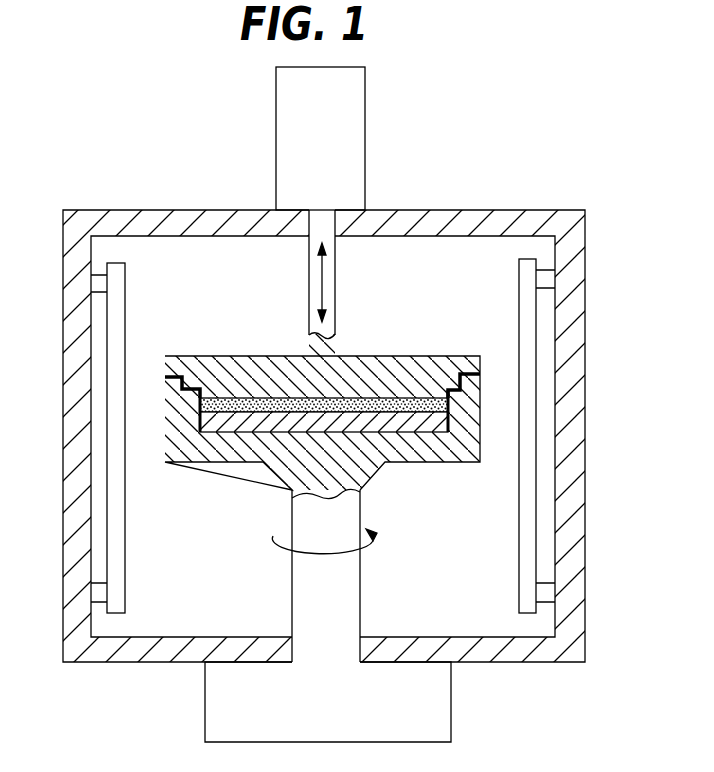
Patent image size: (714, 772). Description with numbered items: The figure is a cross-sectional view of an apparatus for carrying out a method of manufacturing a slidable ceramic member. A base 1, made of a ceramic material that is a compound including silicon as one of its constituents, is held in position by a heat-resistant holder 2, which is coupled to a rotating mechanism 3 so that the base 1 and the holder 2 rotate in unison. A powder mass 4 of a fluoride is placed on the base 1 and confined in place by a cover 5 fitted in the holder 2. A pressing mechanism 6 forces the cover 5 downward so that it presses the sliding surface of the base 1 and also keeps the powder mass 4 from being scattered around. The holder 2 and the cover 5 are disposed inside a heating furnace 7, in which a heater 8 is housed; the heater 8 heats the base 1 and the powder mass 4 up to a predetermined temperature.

The base 1 is at (482, 425).
The heat-resistant holder 2 is at (465, 452).
The rotating mechanism 3 is at (435, 708).
The powder mass 4 is at (458, 407).
The cover 5 is at (462, 356).
The pressing mechanism 6 is at (350, 131).
The heating furnace 7 is at (347, 421).
The heater 8 is at (118, 421).